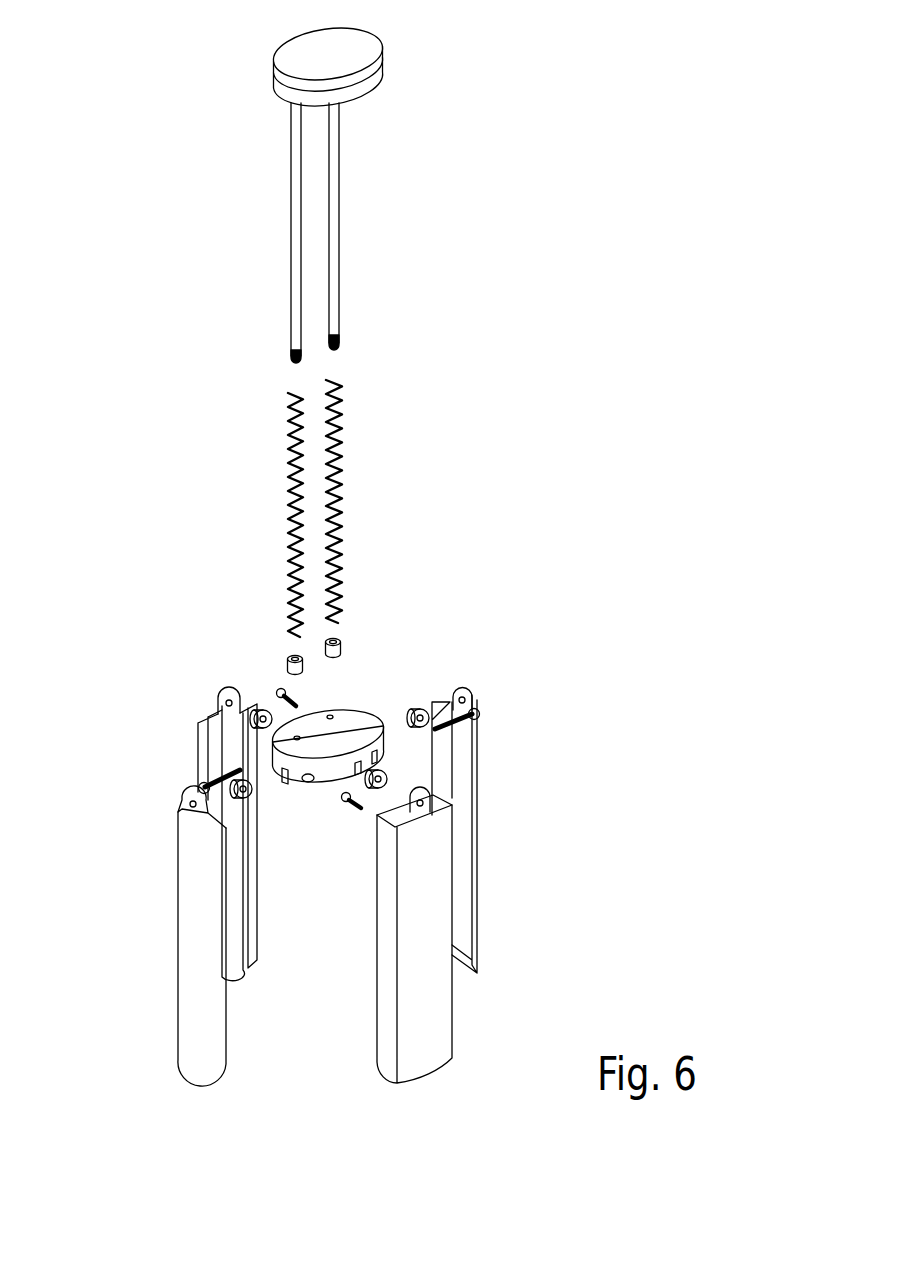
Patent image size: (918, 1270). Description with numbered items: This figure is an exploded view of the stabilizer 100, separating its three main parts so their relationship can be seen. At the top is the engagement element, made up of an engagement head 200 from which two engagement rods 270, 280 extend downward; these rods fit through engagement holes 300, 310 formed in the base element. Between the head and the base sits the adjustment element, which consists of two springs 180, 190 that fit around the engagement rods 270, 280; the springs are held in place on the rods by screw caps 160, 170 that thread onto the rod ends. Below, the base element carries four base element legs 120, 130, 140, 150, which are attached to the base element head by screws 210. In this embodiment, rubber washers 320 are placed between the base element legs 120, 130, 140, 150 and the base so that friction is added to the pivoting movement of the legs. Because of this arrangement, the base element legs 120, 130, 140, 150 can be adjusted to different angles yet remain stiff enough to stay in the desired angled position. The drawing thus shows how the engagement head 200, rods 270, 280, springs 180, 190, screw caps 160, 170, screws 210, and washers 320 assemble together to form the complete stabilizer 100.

The stabilizer 100 is at (485, 510).
The base element leg 120 is at (196, 726).
The base element leg 130 is at (200, 1010).
The base element leg 140 is at (423, 1043).
The base element leg 150 is at (463, 798).
The screw cap 160 is at (287, 655).
The screw cap 170 is at (342, 653).
The spring 180 is at (290, 497).
The spring 190 is at (335, 480).
The engagement head 200 is at (318, 55).
The screw 210 is at (360, 797).
The engagement rod 270 is at (297, 293).
The engagement rod 280 is at (335, 280).
The engagement hole 300 is at (330, 717).
The engagement hole 310 is at (297, 738).
The rubber washer 320 is at (390, 775).